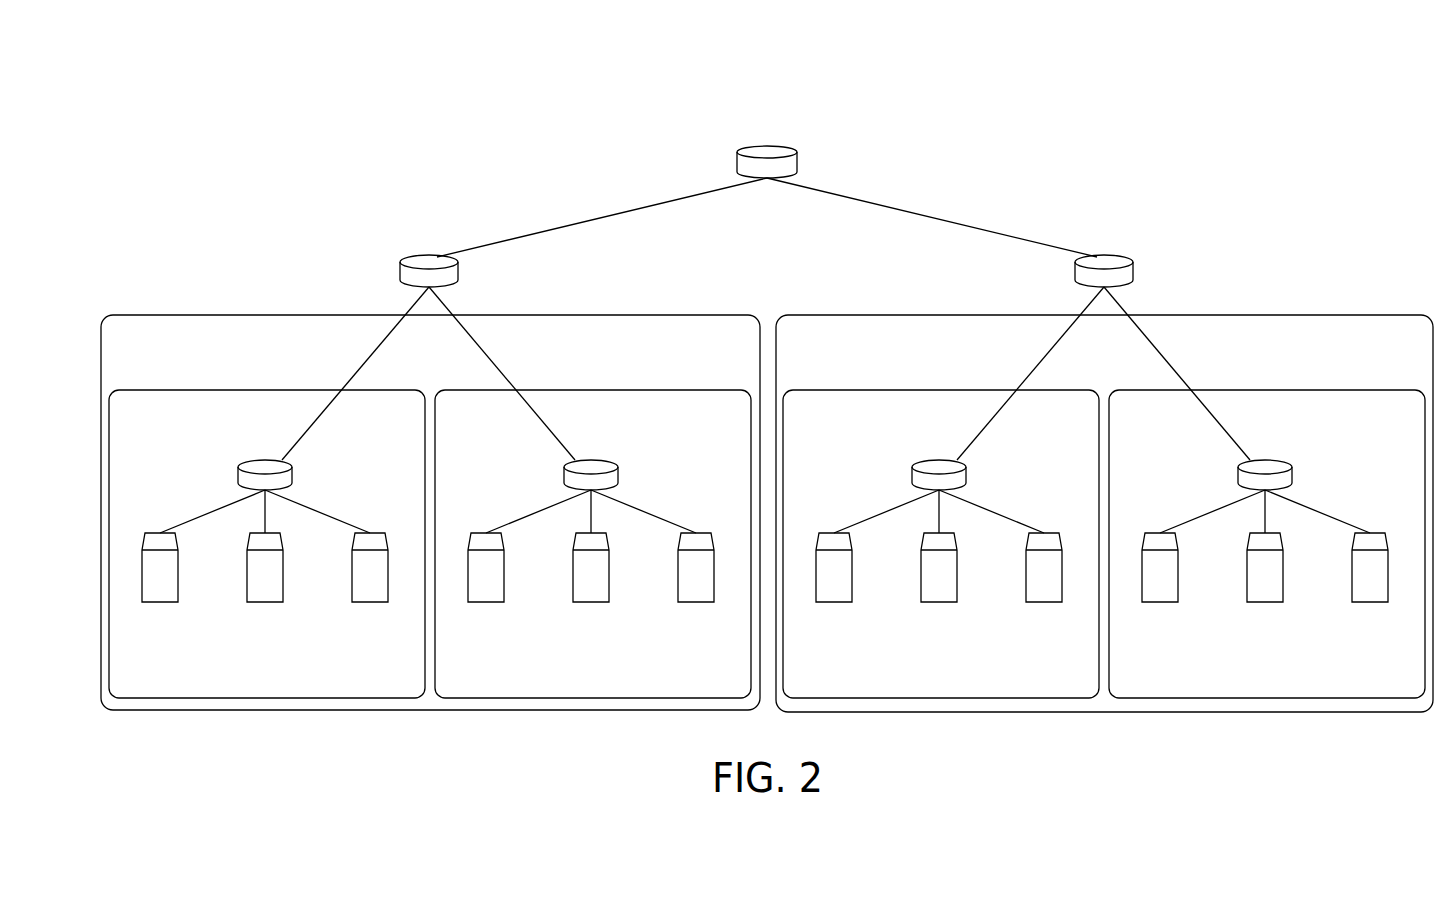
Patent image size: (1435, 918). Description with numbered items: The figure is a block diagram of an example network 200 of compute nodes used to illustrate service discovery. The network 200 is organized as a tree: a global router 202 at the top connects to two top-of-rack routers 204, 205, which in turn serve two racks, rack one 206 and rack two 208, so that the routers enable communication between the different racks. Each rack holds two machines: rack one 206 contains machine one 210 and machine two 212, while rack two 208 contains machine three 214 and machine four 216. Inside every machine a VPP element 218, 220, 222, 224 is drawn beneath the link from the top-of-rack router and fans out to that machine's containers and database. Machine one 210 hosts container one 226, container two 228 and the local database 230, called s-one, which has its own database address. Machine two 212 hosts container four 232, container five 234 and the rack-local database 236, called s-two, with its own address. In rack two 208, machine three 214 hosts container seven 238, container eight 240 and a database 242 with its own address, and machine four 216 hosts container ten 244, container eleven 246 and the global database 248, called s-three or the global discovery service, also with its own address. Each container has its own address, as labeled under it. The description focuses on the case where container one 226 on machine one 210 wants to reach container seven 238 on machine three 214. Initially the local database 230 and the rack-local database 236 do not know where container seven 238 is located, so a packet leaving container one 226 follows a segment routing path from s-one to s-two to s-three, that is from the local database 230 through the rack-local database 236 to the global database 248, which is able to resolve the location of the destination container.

The network 200 is at (1299, 114).
The global router 202 is at (767, 146).
The top-of-rack router 204 is at (415, 255).
The top-of-rack router 205 is at (1118, 255).
The rack1 206 is at (145, 315).
The rack2 208 is at (820, 315).
The machine1 210 is at (242, 390).
The machine2 212 is at (698, 390).
The machine3 214 is at (928, 390).
The machine4 216 is at (1365, 390).
The VPP 218 is at (238, 476).
The VPP 220 is at (564, 476).
The VPP 222 is at (912, 476).
The VPP 224 is at (1238, 476).
The container1 226 is at (150, 533).
The container2 228 is at (247, 590).
The local database 230 is at (378, 533).
The container4 232 is at (476, 533).
The container5 234 is at (573, 590).
The rack-local database 236 is at (704, 533).
The container7 238 is at (824, 533).
The container8 240 is at (921, 590).
The database 242 is at (1052, 533).
The container10 244 is at (1150, 533).
The container11 246 is at (1247, 590).
The global database 248 is at (1378, 533).